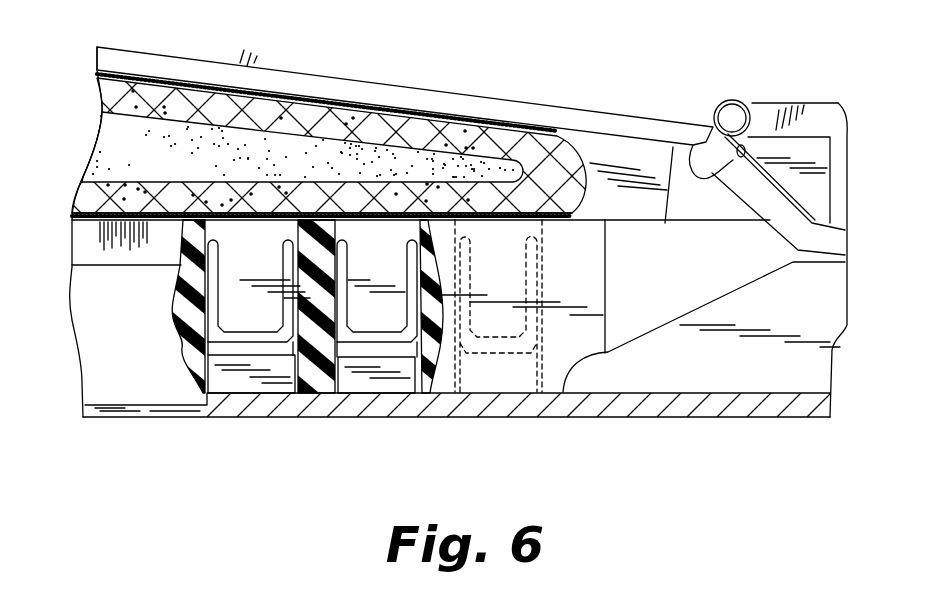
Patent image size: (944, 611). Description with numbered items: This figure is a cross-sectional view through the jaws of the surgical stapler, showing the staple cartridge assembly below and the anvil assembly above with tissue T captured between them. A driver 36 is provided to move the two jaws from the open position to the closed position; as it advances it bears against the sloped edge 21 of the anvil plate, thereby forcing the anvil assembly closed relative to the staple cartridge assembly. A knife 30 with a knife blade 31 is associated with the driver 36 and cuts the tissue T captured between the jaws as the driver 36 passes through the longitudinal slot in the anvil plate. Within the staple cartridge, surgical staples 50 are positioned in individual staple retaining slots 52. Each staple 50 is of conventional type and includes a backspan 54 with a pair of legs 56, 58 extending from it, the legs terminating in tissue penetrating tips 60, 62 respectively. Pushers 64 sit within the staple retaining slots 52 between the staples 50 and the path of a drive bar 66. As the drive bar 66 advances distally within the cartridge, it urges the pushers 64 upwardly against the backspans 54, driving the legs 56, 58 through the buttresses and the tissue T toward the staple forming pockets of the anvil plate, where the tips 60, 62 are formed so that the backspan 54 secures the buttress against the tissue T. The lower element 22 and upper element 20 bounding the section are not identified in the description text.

The tissue T is at (100, 97).
The roof panel 20 is at (263, 68).
The sloped edge 21 is at (697, 130).
The floor 22 is at (102, 407).
The knife 30 is at (802, 190).
The knife blade 31 is at (748, 137).
The driver 36 is at (748, 102).
The surgical staples 50 is at (182, 362).
The staple retaining slots 52 is at (247, 333).
The backspan 54 is at (220, 348).
The leg 56 is at (180, 310).
The leg 58 is at (280, 322).
The tissue penetrating tip 60 is at (228, 258).
The tissue penetrating tip 62 is at (287, 253).
The pushers 64 is at (375, 378).
The drive bar 66 is at (758, 368).